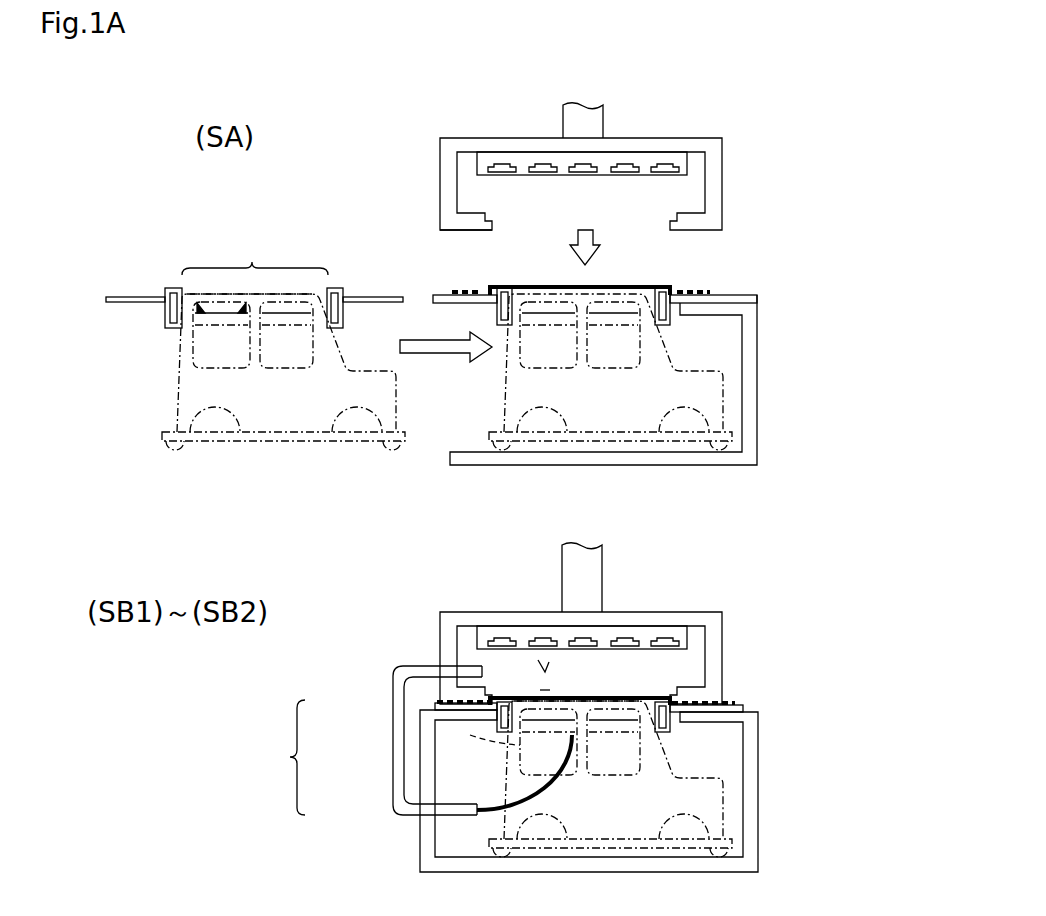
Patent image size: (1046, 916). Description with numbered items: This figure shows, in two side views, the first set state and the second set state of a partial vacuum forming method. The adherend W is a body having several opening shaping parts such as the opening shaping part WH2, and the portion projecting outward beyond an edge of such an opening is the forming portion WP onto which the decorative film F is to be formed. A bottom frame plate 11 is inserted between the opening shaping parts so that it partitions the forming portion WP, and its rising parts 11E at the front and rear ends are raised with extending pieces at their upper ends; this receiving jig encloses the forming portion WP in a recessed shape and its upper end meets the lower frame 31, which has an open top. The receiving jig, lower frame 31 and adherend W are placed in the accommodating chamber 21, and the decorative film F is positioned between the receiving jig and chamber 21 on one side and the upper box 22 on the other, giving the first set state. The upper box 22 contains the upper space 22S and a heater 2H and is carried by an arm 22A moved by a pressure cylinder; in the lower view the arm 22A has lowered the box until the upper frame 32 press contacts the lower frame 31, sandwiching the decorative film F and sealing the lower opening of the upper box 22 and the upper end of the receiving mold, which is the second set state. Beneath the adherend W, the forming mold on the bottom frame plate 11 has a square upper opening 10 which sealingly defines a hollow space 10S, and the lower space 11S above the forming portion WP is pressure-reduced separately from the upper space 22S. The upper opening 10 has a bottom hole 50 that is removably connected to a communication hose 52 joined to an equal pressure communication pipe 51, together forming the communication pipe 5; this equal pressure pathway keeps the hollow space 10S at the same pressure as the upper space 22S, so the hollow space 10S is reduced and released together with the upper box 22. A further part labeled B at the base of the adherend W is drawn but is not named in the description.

The adherend W is at (195, 405).
The forming portion WP is at (252, 262).
The opening shaping part WH2 is at (200, 345).
The upper opening 10 is at (205, 300).
The hollow space 10S is at (520, 745).
The bottom frame plate 11 is at (670, 323).
The rising parts 11E is at (172, 290).
The lower space 11S is at (545, 690).
The accommodating chamber 21 is at (745, 298).
The upper box 22 is at (490, 138).
The arm 22A is at (587, 123).
The upper space 22S is at (545, 660).
The heater 2H is at (633, 163).
The lower frame 31 is at (447, 292).
The upper frame 32 is at (478, 213).
The decorative film F is at (490, 287).
The base plate of workpiece B is at (687, 442).
The communication pipe 5 is at (281, 757).
The bottom hole 50 is at (470, 735).
The equal pressure communication pipe 51 is at (393, 728).
The communication hose 52 is at (545, 792).